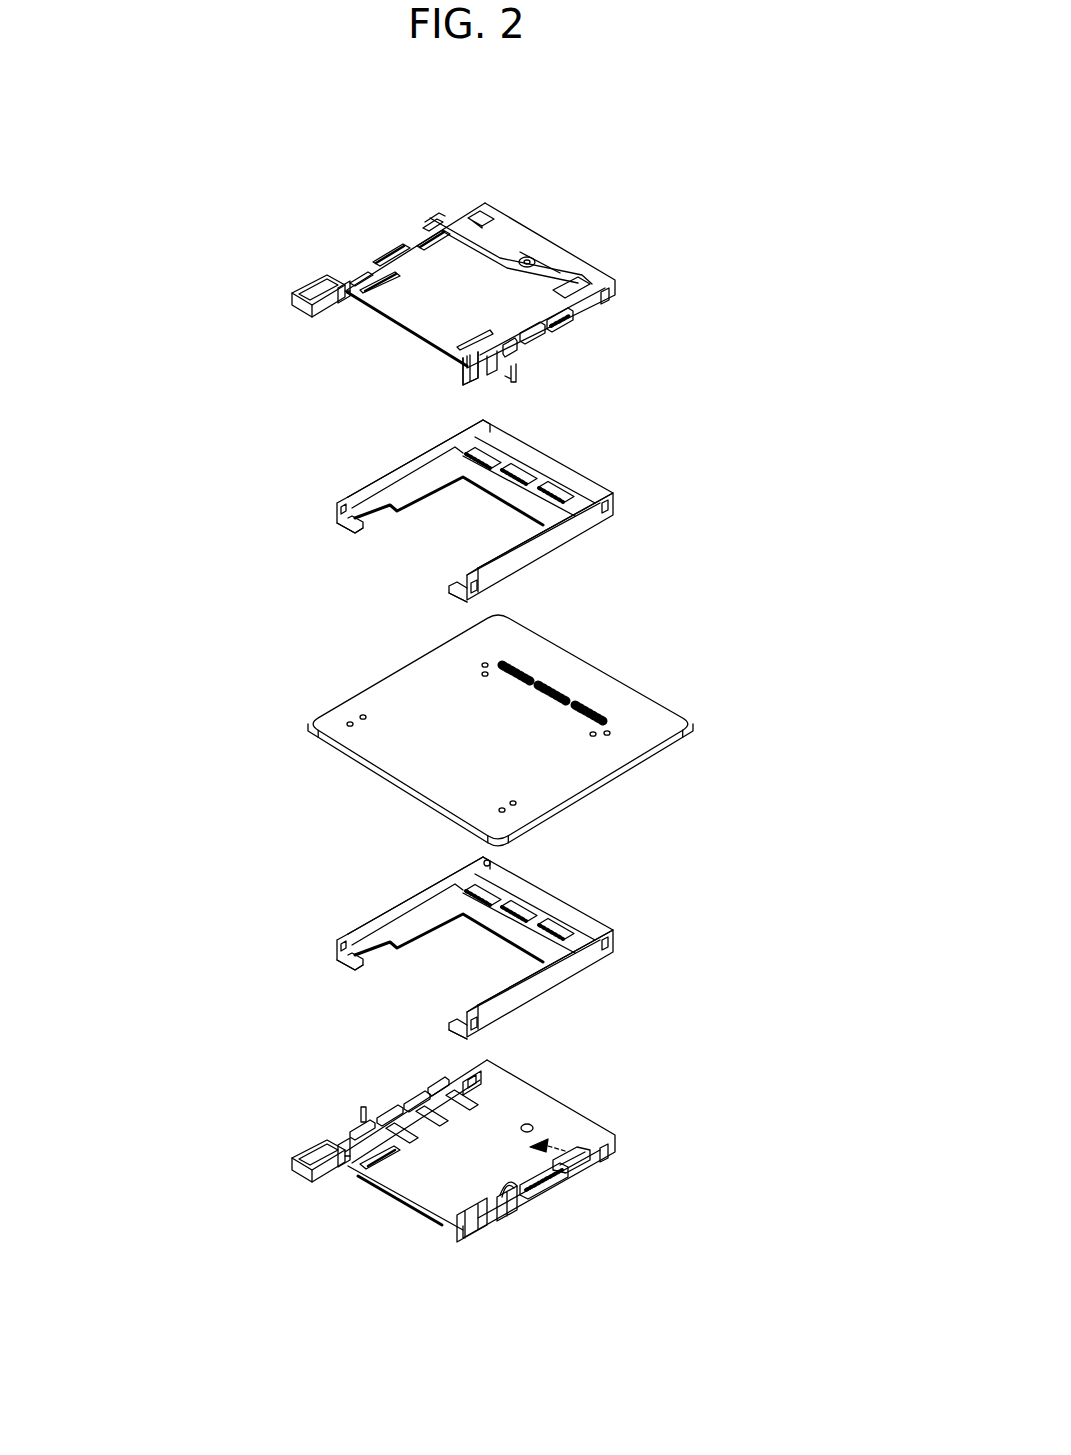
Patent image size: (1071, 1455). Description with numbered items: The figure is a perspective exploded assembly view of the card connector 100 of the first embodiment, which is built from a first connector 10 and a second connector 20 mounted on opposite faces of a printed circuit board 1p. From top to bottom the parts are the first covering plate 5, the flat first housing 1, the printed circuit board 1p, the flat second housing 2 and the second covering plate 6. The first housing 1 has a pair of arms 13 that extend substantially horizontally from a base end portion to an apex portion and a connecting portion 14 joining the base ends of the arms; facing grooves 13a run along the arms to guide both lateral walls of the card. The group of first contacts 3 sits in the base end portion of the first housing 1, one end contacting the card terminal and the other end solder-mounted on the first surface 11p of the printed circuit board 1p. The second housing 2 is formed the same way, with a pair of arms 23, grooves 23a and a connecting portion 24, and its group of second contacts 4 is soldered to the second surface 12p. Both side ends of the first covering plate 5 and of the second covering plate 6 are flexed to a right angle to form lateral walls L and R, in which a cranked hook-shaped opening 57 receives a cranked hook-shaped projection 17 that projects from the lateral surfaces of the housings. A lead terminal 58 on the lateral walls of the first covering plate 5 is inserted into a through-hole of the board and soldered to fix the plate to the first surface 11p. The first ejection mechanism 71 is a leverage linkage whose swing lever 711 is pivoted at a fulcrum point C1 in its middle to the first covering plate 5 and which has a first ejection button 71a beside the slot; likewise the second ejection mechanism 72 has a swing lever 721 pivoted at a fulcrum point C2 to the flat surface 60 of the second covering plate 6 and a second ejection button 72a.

The connector 100 is at (190, 152).
The first connector 10 is at (742, 366).
The second connector 20 is at (713, 1131).
The first housing 1 is at (385, 577).
The second housing 2 is at (388, 1005).
The group of first contacts 3 is at (515, 413).
The group of second contacts 4 is at (515, 850).
The first covering plate 5 is at (385, 338).
The second covering plate 6 is at (412, 1210).
The printed circuit board 1p is at (696, 733).
The first surface 11p is at (655, 712).
The second surface 12p is at (652, 760).
The arms 13 is at (345, 500).
The grooves 13a is at (350, 522).
The connecting portion 14 is at (500, 487).
The cranked hook-shaped projection 17 is at (612, 505).
The arms 23 is at (378, 908).
The grooves 23a is at (350, 950).
The connecting portion 24 is at (505, 925).
The cranked hook-shaped opening 57 is at (471, 210).
The lead terminal 58 is at (520, 371).
The flat surface 60 is at (450, 1188).
The first ejection mechanism 71 is at (583, 244).
The first ejection button 71a is at (292, 293).
The swing lever 711 is at (556, 262).
The second ejection mechanism 72 is at (578, 1150).
The second ejection button 72a is at (292, 1166).
The swing lever 721 is at (500, 1118).
The fulcrum point C1 is at (528, 254).
The fulcrum point C2 is at (535, 1125).
The lateral wall L is at (335, 297).
The lateral wall R is at (478, 375).